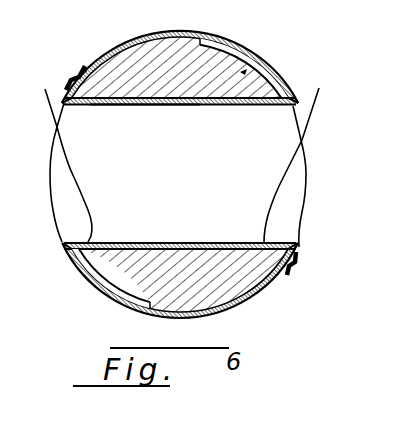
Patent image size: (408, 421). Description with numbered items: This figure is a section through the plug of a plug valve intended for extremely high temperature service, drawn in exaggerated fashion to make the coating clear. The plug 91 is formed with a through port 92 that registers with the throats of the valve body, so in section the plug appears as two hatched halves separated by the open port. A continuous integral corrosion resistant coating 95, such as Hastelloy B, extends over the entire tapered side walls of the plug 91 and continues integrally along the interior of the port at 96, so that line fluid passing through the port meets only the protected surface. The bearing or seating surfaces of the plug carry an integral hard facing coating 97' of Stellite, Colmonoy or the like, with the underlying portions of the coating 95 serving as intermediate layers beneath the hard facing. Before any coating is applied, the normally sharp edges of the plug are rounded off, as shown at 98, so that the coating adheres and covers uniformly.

The plug 91 is at (261, 62).
The corrosion resistant coating 95 is at (219, 43).
The hard facing coating 97' is at (177, 50).
The coating portion interiorly of bore 96 is at (209, 106).
The through port 92 is at (123, 108).
The rounded edges 98 is at (68, 80).